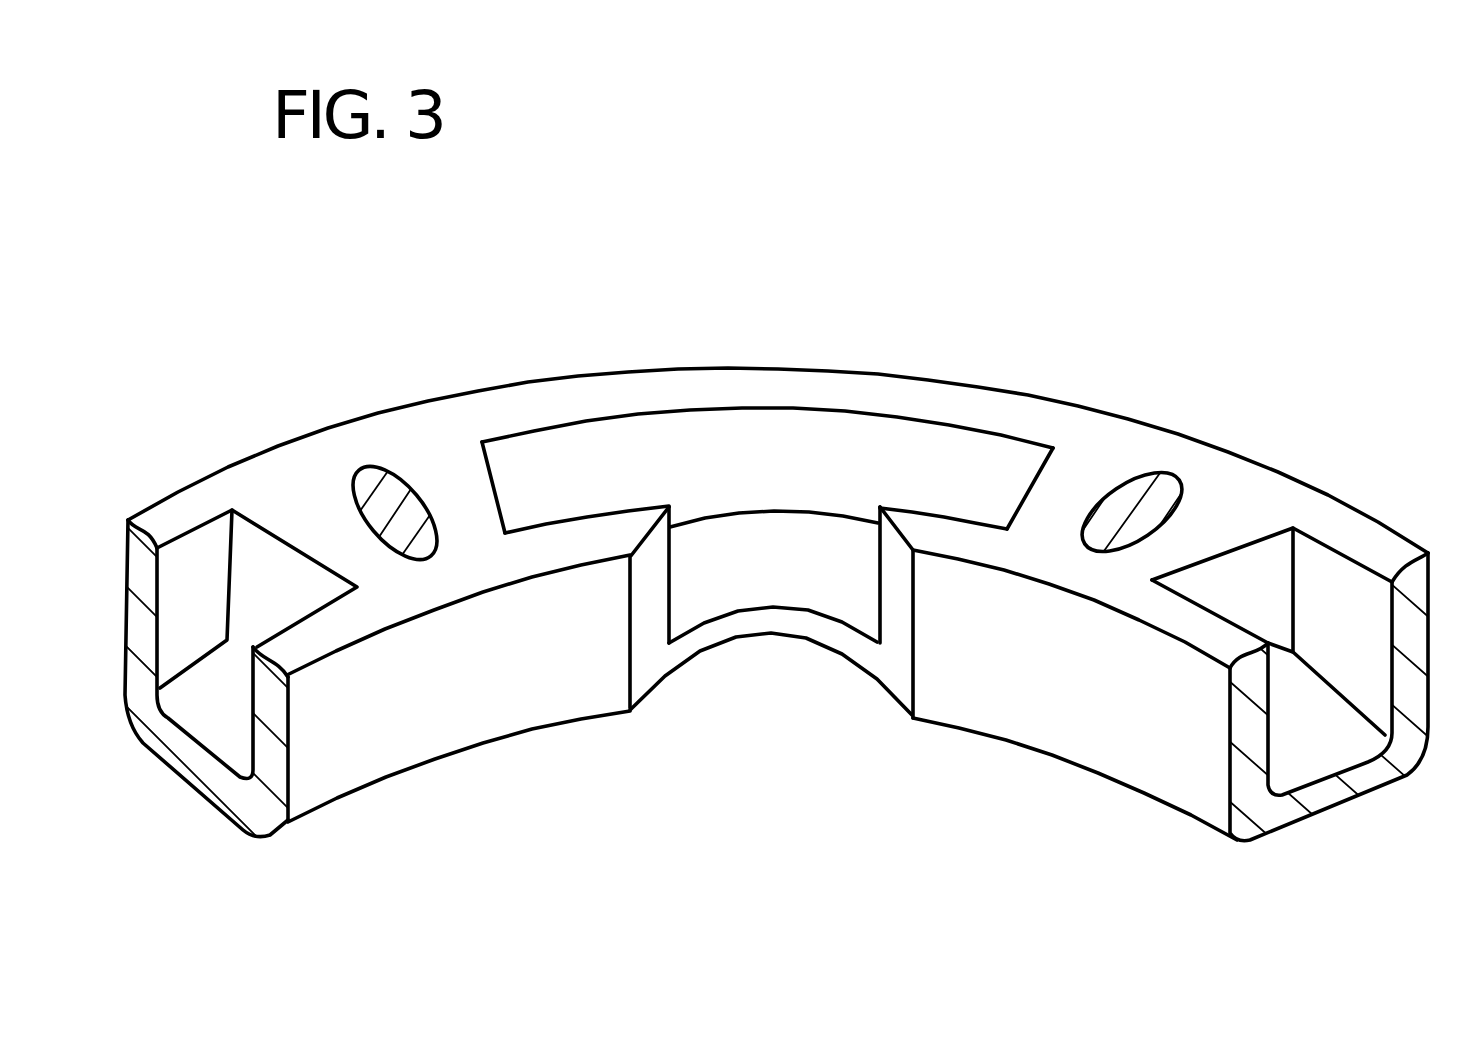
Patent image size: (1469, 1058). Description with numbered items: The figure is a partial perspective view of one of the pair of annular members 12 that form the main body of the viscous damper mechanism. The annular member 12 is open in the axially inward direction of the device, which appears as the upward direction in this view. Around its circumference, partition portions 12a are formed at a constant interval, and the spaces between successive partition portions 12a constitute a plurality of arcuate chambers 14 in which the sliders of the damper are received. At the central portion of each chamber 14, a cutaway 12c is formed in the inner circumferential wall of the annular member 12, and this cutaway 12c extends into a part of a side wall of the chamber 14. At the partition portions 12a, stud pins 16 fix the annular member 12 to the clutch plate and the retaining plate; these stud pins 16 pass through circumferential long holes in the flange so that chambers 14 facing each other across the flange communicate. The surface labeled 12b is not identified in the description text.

The annular member 12 is at (764, 648).
The partition portion 12a is at (462, 505).
The outer peripheral portion 12b is at (714, 395).
The cutaway 12c is at (882, 658).
The arcuate chamber 14 is at (882, 457).
The stud pin 16 is at (386, 490).